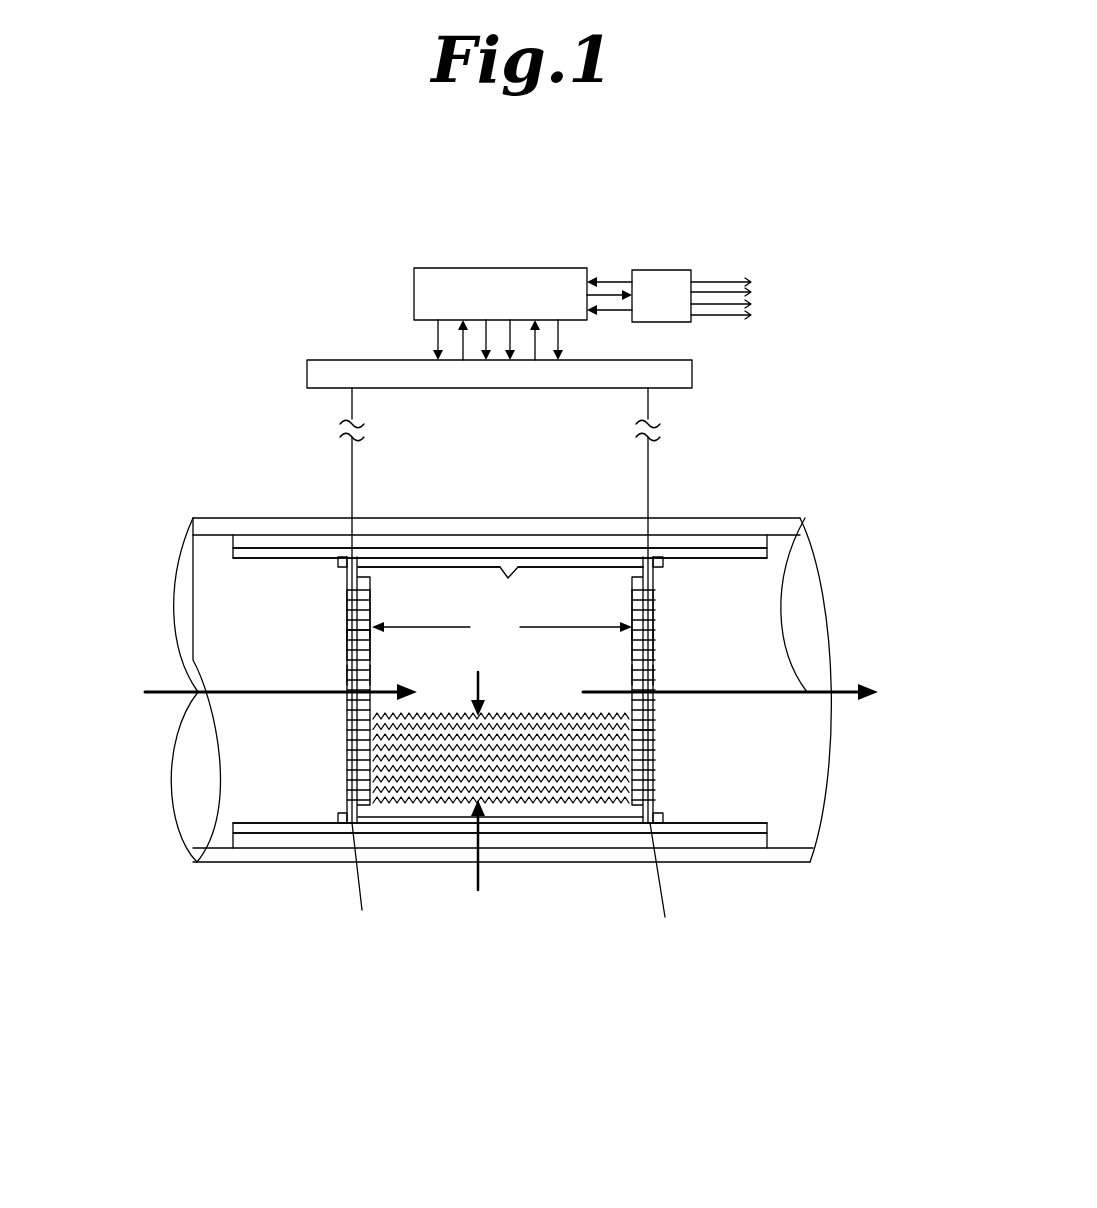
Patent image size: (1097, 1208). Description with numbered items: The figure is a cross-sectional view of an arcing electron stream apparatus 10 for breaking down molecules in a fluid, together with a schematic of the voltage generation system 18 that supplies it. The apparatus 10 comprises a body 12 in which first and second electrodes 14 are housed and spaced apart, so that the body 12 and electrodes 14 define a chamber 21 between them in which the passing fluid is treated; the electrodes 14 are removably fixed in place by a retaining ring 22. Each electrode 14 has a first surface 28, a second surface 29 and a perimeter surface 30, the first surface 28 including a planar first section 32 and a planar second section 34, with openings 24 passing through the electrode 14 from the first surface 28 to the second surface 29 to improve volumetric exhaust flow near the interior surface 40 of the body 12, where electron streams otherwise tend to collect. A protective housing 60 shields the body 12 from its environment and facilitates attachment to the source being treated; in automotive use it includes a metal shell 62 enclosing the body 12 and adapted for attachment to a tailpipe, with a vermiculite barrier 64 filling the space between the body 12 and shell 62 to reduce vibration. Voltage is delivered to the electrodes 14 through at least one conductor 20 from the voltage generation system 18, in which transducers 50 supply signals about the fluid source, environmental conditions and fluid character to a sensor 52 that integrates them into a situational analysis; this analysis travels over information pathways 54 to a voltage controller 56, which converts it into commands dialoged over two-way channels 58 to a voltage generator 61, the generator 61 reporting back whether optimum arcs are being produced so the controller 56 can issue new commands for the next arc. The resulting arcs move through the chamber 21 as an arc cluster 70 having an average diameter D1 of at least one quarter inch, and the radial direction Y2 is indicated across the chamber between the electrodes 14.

The apparatus 10 is at (323, 917).
The body 12 is at (523, 833).
The electrodes 14 is at (653, 627).
The voltage generation system 18 is at (526, 290).
The conductor 20 is at (650, 480).
The chamber 21 is at (508, 697).
The retaining ring 22 is at (665, 817).
The openings 24 is at (632, 657).
The first surface 28 is at (630, 600).
The second surface 29 is at (653, 737).
The perimeter surface 30 is at (517, 887).
The first section 32 is at (655, 672).
The second section 34 is at (632, 572).
The interior surface 40 is at (516, 567).
The transducers 50 is at (721, 292).
The sensor 52 is at (657, 268).
The information pathways 54 is at (616, 297).
The voltage controller 56 is at (493, 268).
The two-way channels 58 is at (520, 335).
The protective housing 60 is at (562, 862).
The voltage generator 61 is at (693, 373).
The metal shell 62 is at (617, 862).
The vermiculite barrier 64 is at (583, 848).
The arc cluster 70 is at (443, 800).
The radial direction Y2 is at (502, 626).
The diameter D1 is at (482, 862).